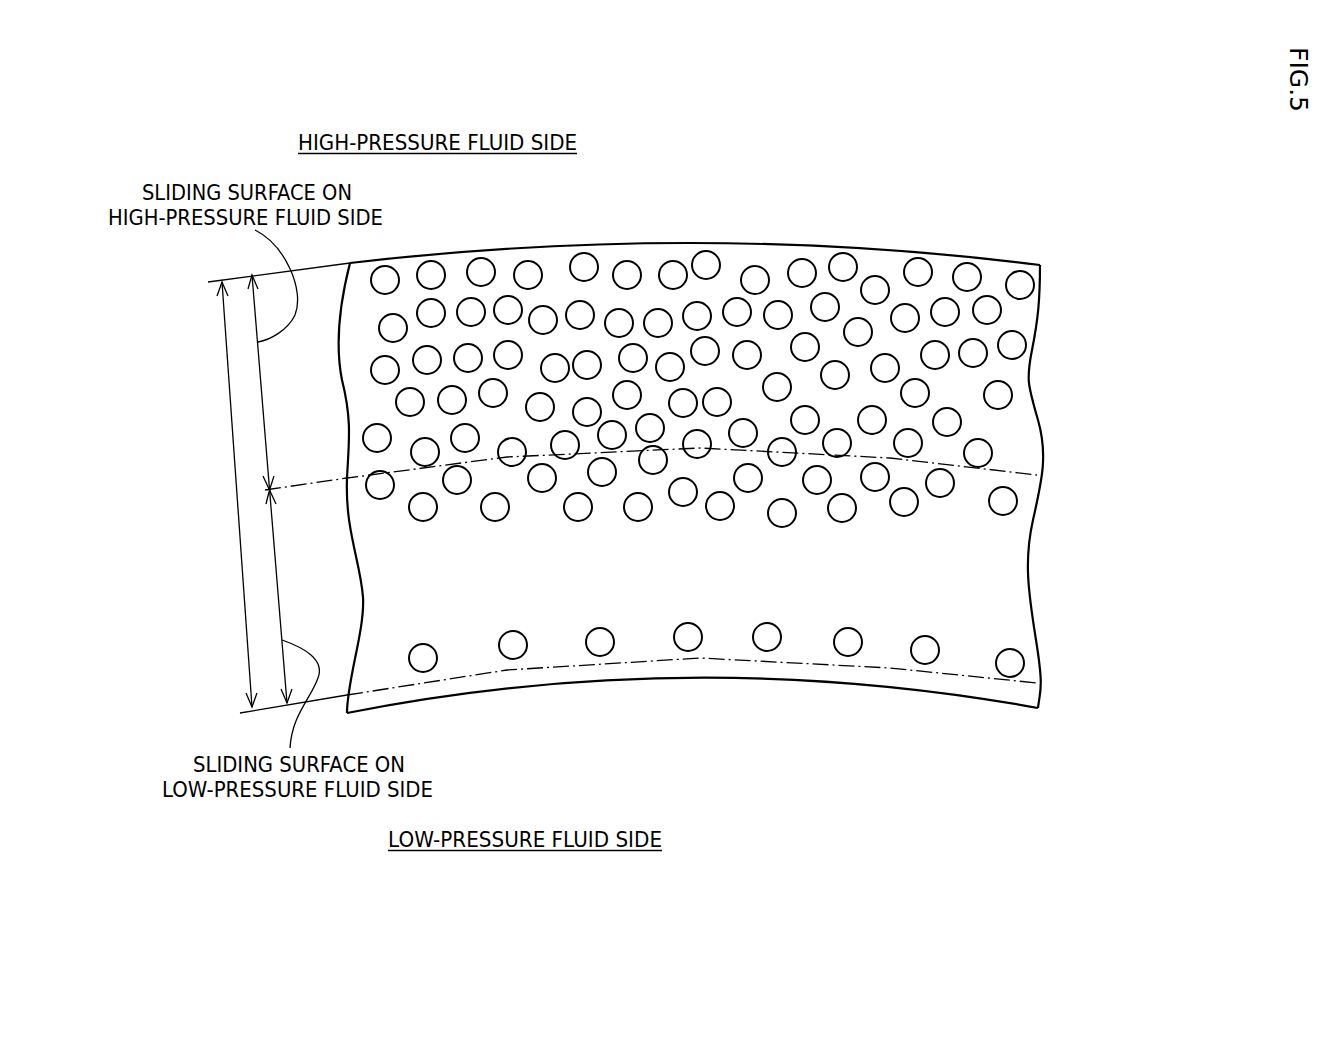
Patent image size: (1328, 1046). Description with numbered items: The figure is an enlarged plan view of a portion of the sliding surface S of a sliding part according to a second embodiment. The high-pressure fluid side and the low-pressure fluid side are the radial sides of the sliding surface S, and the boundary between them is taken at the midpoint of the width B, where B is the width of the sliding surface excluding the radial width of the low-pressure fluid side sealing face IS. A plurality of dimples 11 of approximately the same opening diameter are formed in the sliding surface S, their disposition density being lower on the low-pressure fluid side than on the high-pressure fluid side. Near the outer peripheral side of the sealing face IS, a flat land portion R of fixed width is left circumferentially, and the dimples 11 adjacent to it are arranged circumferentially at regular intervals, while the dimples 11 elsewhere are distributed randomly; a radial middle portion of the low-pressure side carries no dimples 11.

The dimples 11 is at (735, 310).
The sliding surface S is at (655, 257).
The flat land portion R is at (988, 587).
The low-pressure fluid side sealing face IS is at (743, 670).
The width of the sliding surface portion B is at (279, 485).